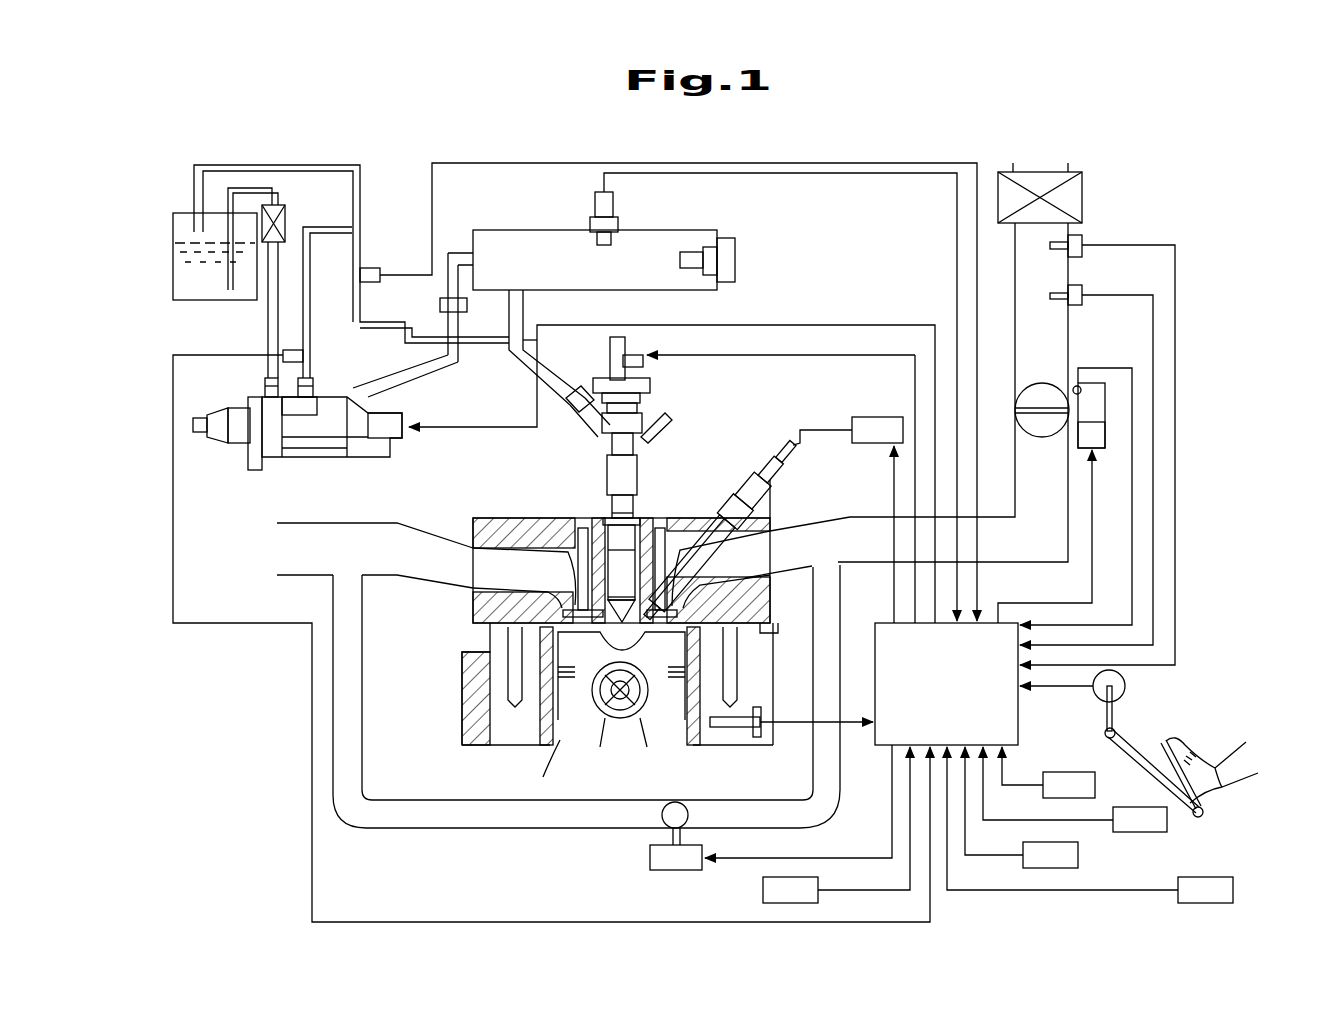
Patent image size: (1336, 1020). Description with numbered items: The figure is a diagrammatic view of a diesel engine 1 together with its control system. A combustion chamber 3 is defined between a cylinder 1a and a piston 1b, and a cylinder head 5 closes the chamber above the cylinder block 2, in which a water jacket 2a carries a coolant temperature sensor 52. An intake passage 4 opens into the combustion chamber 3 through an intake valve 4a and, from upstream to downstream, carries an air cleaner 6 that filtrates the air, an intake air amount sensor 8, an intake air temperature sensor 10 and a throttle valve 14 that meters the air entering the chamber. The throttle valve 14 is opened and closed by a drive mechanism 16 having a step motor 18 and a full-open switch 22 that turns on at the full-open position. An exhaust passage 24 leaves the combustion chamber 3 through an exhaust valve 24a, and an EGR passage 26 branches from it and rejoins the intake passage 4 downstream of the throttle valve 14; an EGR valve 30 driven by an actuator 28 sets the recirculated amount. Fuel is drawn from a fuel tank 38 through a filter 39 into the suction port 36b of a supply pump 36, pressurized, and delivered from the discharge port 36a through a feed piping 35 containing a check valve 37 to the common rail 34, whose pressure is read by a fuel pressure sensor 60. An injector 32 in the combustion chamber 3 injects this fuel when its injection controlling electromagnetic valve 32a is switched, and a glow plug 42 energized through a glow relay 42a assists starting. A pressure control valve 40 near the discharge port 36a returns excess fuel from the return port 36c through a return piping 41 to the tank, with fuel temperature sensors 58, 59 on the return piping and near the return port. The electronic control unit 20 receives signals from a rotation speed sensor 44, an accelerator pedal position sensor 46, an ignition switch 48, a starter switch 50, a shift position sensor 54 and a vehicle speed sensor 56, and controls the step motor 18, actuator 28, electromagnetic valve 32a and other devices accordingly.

The engine 1 is at (626, 639).
The cylinder 1a is at (643, 713).
The piston 1b is at (490, 742).
The crankshaft 2 is at (752, 680).
The water jacket 2a is at (757, 700).
The combustion chamber 3 is at (593, 650).
The intake passage 4 is at (802, 527).
The intake valve 4a is at (692, 572).
The cylinder head 5 is at (475, 608).
The air cleaner 6 is at (1082, 190).
The intake air amount sensor 8 is at (1082, 240).
The intake air temperature sensor 10 is at (1082, 290).
The throttle valve 14 is at (1040, 437).
The drive mechanism 16 is at (1097, 362).
The step motor 18 is at (1103, 450).
The electronic control unit 20 is at (878, 622).
The full-open switch 22 is at (1072, 386).
The exhaust passage 24 is at (318, 523).
The exhaust valve 24a is at (575, 590).
The EGR passage 26 is at (535, 830).
The actuator 28 is at (648, 858).
The EGR valve 30 is at (677, 800).
The injector 32 is at (605, 470).
The injection controlling electromagnetic valve 32a is at (648, 363).
The common rail 34 is at (522, 230).
The feed piping 35 is at (430, 372).
The supply pump 36 is at (293, 457).
The discharge port 36a is at (363, 393).
The suction port 36b is at (265, 382).
The return port 36c is at (312, 378).
The check valve 37 is at (438, 305).
The fuel tank 38 is at (173, 283).
The filter 39 is at (285, 212).
The pressure control valve 40 is at (393, 412).
The return piping 41 is at (360, 178).
The glow plug 42 is at (705, 500).
The glow relay 42a is at (857, 417).
The rotation speed sensor 44 is at (762, 888).
The accelerator pedal position sensor 46 is at (1126, 686).
The ignition switch 48 is at (1225, 877).
The starter switch 50 is at (1080, 860).
The coolant temperature sensor 52 is at (765, 737).
The shift position sensor 54 is at (1152, 835).
The vehicle speed sensor 56 is at (1095, 785).
The fuel temperature sensor 58 is at (377, 267).
The fuel temperature sensor 59 is at (293, 350).
The fuel pressure sensor 60 is at (617, 203).